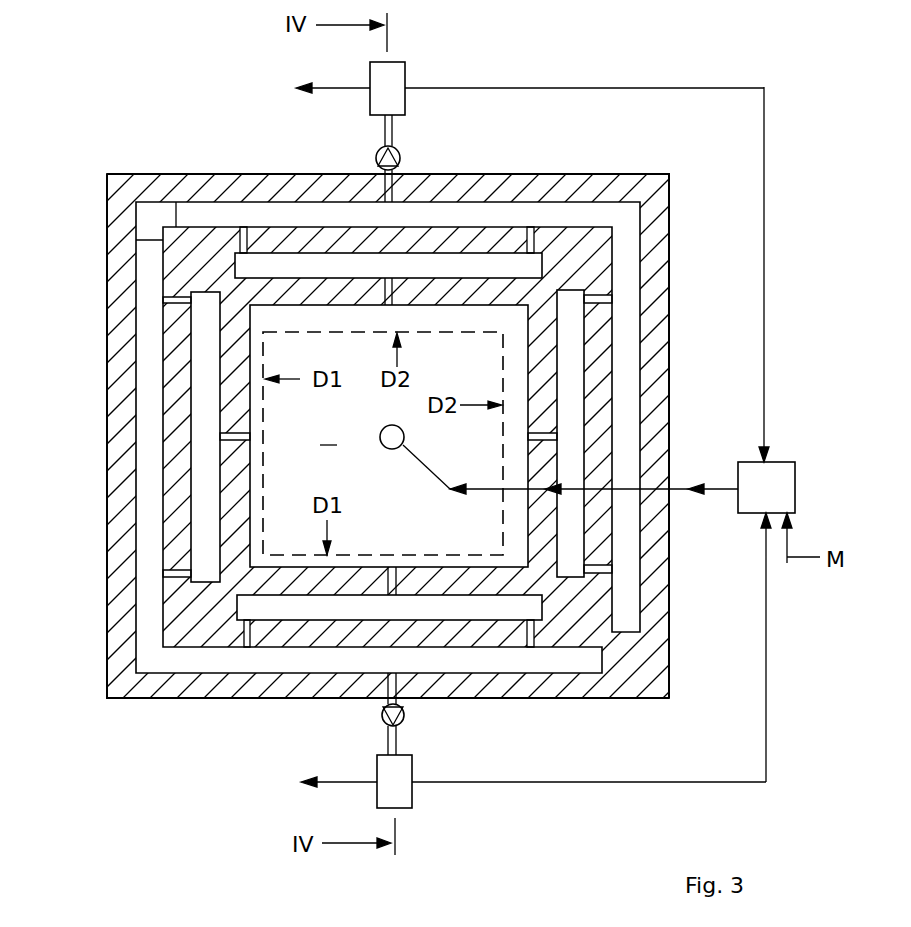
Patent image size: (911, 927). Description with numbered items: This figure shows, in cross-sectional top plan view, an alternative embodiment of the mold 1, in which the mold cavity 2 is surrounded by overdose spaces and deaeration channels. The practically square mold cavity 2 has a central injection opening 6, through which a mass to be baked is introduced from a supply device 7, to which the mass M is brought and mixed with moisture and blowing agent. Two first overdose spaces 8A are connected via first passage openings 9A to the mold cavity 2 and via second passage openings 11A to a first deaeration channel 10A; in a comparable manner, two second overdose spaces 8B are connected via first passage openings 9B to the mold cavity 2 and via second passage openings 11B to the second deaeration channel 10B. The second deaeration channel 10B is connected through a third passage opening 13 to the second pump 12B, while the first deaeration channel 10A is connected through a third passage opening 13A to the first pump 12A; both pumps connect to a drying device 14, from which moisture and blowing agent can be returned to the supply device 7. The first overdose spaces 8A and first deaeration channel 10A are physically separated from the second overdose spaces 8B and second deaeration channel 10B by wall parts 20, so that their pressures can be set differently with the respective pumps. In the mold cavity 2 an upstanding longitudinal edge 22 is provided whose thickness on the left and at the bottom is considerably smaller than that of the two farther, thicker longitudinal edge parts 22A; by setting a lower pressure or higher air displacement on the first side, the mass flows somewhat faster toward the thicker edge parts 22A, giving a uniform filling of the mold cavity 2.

The mold 1 is at (92, 166).
The mold cavity 2 is at (328, 432).
The injection opening 6 is at (382, 446).
The supply device 7 is at (795, 488).
The first overdose space 8A is at (304, 266).
The second overdose space 8B is at (207, 466).
The first passage opening 9A is at (543, 437).
The first passage opening 9B is at (224, 436).
The first deaeration channel 10A is at (625, 258).
The second deaeration channel 10B is at (150, 625).
The second passage opening 11A is at (242, 233).
The second passage opening 11B is at (170, 573).
The first pump 12A is at (400, 158).
The second pump 12B is at (403, 718).
The third passage opening 13 is at (400, 700).
The third passage opening 13A is at (372, 173).
The drying device 14 is at (398, 73).
The wall part 20 is at (167, 234).
The upstanding longitudinal edge 22 is at (258, 515).
The longitudinal edge part 22A is at (461, 328).